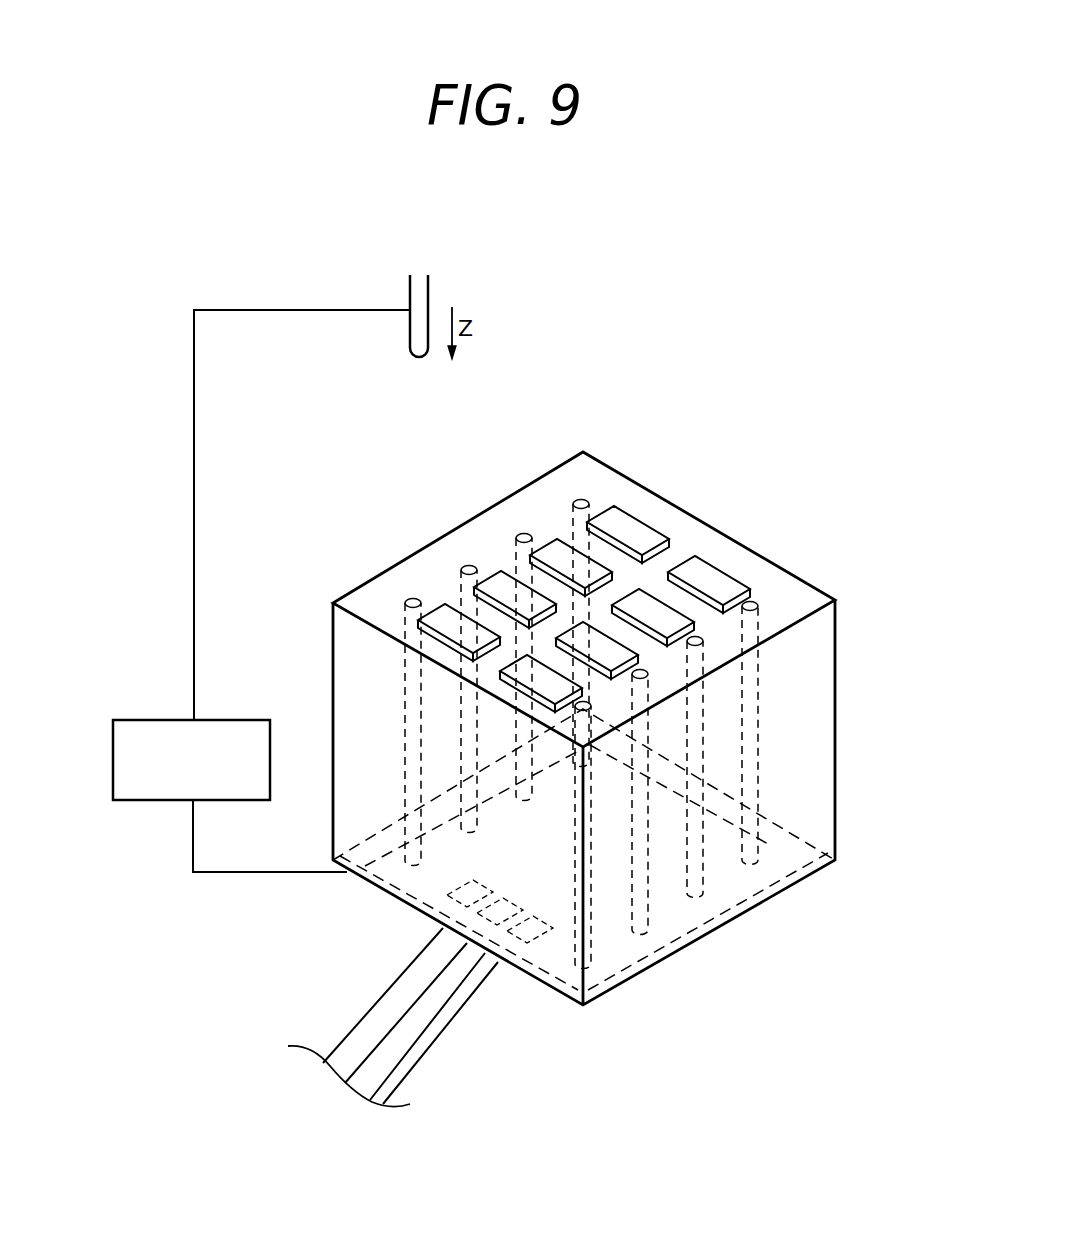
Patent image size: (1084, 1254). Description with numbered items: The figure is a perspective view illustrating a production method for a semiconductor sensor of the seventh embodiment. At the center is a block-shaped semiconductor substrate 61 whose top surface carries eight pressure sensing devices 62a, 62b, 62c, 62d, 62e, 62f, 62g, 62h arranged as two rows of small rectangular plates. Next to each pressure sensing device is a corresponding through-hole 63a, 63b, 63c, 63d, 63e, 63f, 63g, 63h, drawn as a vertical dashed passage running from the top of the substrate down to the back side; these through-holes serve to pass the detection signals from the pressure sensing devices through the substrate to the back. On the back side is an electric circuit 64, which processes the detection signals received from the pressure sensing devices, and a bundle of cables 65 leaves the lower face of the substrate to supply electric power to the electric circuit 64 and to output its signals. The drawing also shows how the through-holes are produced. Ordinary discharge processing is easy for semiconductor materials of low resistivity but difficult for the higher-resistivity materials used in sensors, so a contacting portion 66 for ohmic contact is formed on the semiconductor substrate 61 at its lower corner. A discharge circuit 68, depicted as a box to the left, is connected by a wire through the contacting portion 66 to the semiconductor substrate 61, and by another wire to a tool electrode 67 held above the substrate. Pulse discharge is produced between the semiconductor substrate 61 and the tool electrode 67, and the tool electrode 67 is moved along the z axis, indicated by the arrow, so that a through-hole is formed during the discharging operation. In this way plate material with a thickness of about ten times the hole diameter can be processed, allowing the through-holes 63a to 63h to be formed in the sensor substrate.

The semiconductor substrate 61 is at (812, 585).
The pressure sensing device 62a is at (418, 620).
The pressure sensing device 62b is at (474, 587).
The pressure sensing device 62c is at (530, 555).
The pressure sensing device 62d is at (620, 508).
The pressure sensing device 62e is at (720, 563).
The pressure sensing device 62f is at (693, 622).
The pressure sensing device 62g is at (640, 665).
The pressure sensing device 62h is at (585, 690).
The through-hole 63a is at (405, 620).
The through-hole 63b is at (461, 585).
The through-hole 63c is at (516, 553).
The through-hole 63d is at (572, 520).
The through-hole 63e is at (758, 607).
The through-hole 63f is at (703, 645).
The through-hole 63g is at (648, 678).
The through-hole 63h is at (590, 833).
The electric circuit 64 is at (625, 963).
The cables 65 is at (447, 1035).
The contacting portion 66 is at (360, 878).
The tool electrode 67 is at (427, 292).
The discharge circuit 68 is at (247, 720).